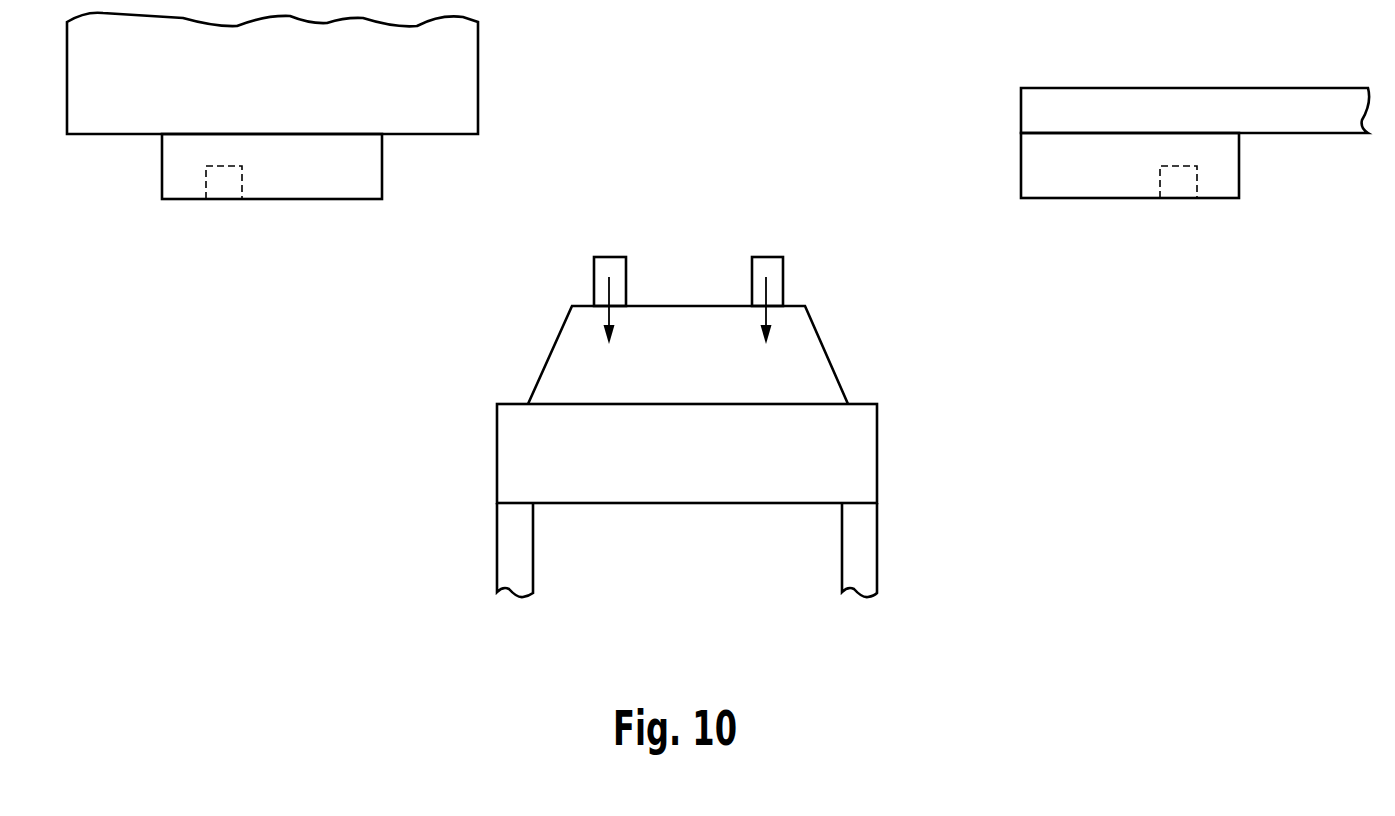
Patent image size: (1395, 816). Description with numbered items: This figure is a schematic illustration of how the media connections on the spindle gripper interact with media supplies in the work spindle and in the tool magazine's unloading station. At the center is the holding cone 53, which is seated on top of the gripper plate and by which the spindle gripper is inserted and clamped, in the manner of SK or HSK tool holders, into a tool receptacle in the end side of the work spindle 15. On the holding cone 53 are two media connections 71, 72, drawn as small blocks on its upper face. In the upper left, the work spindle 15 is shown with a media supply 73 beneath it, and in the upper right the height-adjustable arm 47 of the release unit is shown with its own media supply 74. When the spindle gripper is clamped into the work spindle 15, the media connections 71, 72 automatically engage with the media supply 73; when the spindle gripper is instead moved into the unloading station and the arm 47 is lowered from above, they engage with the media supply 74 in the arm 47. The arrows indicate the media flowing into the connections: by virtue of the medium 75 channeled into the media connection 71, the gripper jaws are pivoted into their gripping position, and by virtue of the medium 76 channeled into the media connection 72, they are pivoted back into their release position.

The work spindle 15 is at (460, 63).
The media supply 73 is at (323, 182).
The height-adjustable arm 47 is at (1116, 104).
The media supply 74 is at (1117, 182).
The holding cone 53 is at (815, 373).
The media connection 71 is at (608, 256).
The media connection 72 is at (767, 256).
The medium 75 is at (603, 314).
The medium 76 is at (770, 314).